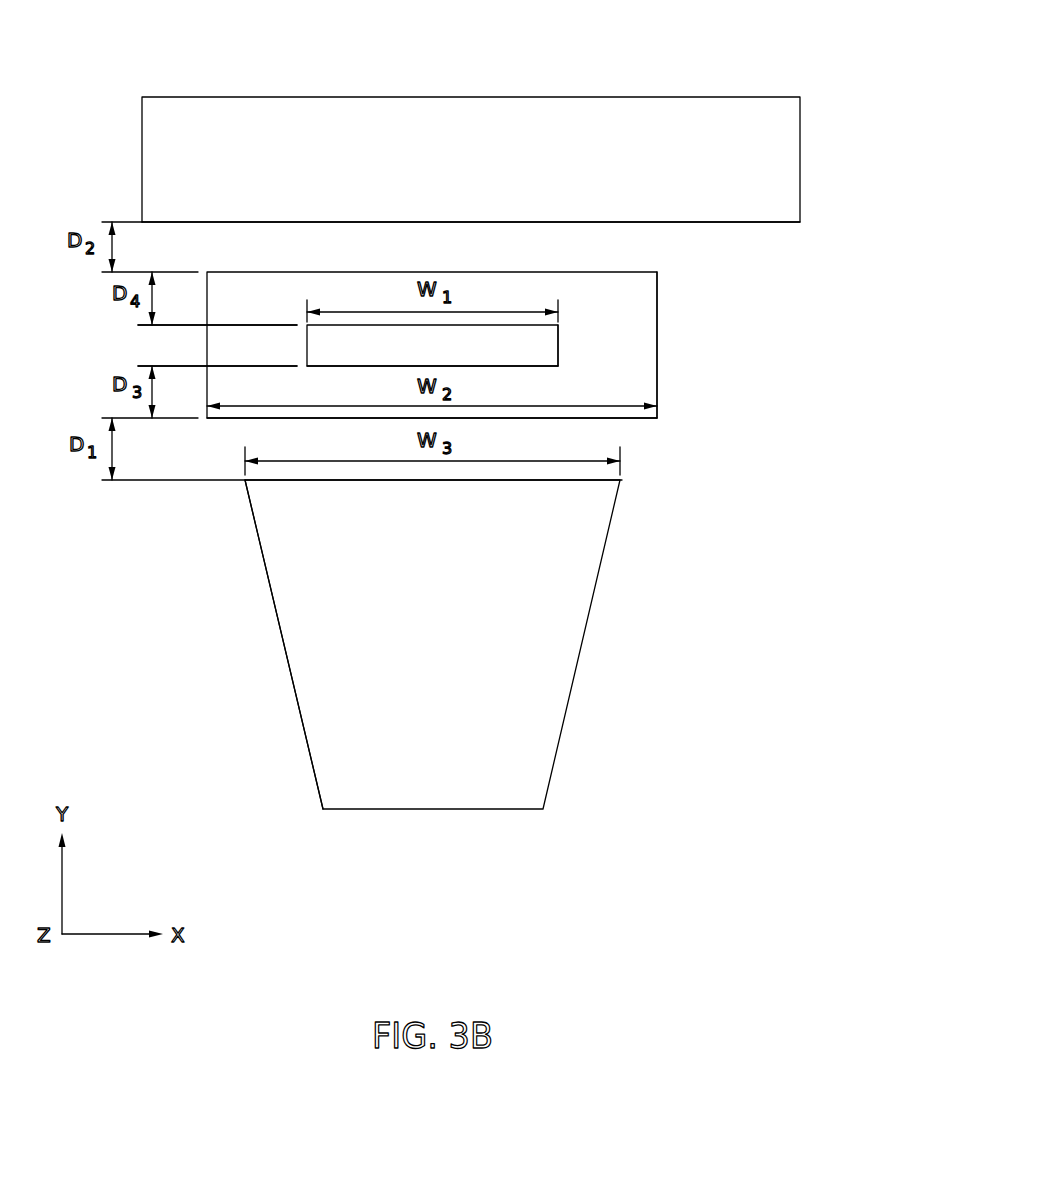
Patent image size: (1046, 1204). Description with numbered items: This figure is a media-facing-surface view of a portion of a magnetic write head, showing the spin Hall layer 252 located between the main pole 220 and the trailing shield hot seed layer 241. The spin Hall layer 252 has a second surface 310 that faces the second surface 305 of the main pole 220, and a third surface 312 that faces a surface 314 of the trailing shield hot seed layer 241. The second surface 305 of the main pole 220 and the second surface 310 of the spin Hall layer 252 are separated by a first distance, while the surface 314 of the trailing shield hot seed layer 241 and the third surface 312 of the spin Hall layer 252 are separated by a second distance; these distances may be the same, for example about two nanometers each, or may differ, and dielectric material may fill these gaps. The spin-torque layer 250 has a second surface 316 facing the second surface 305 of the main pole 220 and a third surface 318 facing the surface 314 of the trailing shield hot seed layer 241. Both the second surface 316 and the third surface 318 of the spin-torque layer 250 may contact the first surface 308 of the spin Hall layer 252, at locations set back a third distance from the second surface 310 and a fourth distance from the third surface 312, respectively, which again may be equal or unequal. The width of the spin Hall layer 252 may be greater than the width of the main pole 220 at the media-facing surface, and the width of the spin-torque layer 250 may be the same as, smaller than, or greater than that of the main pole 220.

The trailing shield hot seed layer 241 is at (605, 123).
The surface of the trailing shield hot seed layer 314 is at (768, 222).
The third surface of the spin Hall layer 312 is at (572, 272).
The third surface of the spin-torque layer 318 is at (520, 327).
The spin Hall layer 252 is at (633, 348).
The spin-torque layer 250 is at (563, 366).
The second surface of the spin-torque layer 316 is at (523, 367).
The second surface of the spin Hall layer 310 is at (627, 418).
The first surface of the spin Hall layer 308 is at (227, 342).
The second surface of the main pole 305 is at (568, 562).
The main pole 220 is at (347, 710).